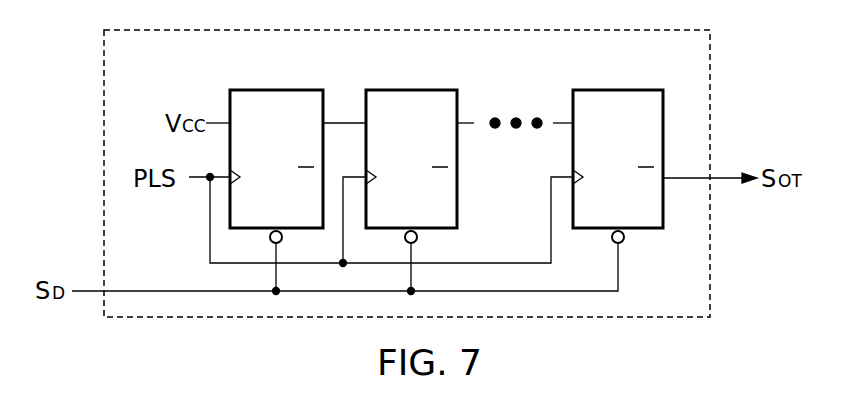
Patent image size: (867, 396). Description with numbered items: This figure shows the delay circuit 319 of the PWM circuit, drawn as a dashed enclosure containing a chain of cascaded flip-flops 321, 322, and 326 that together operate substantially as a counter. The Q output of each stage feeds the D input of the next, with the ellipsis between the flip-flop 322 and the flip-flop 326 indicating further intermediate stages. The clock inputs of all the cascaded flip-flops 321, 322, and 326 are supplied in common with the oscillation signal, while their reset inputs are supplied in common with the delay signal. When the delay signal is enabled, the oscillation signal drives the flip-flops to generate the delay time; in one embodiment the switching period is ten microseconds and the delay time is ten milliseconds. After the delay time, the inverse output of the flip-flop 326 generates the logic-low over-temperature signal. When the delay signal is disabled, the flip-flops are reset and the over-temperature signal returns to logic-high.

The delay circuit 319 is at (714, 52).
The flip-flop 321 is at (273, 88).
The flip-flop 322 is at (406, 88).
The flip-flop 326 is at (614, 88).